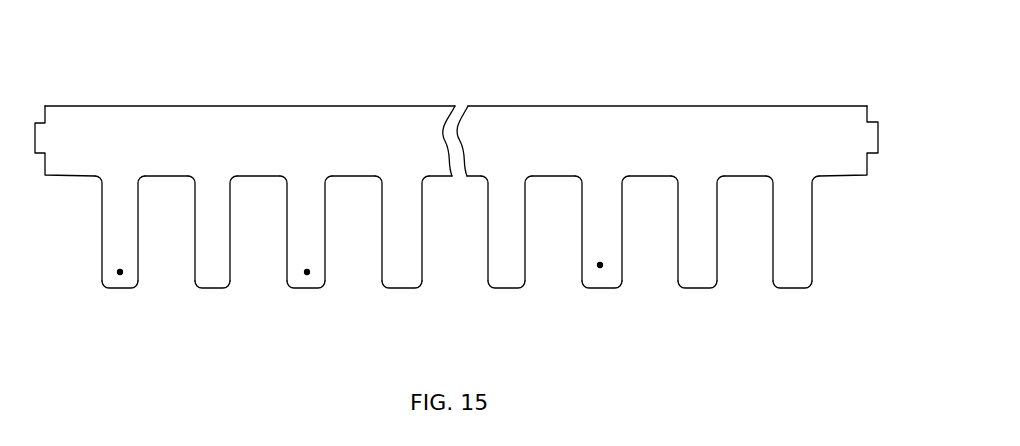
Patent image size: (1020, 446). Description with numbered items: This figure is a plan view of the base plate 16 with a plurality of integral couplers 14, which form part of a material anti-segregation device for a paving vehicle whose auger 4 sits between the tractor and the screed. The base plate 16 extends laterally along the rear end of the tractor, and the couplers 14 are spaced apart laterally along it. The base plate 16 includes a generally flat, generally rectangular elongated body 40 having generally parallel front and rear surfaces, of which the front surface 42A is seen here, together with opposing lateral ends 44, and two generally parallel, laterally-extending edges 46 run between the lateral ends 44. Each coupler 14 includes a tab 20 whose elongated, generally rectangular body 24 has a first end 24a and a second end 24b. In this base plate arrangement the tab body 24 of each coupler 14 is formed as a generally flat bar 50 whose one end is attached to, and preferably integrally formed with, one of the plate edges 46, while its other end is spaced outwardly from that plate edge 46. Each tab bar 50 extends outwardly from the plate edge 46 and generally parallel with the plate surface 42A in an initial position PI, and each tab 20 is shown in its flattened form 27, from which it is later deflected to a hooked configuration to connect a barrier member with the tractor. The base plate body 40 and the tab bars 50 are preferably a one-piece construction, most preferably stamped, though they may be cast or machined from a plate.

The auger 4 is at (35, 141).
The coupler 14 is at (157, 340).
The base plate 16 is at (450, 125).
The coupler tab 20 is at (457, 256).
The tab body 24 is at (457, 235).
The body first end 24a is at (123, 290).
The body second end 24b is at (118, 185).
The flattened form 27 is at (213, 245).
The elongated body 40 is at (364, 97).
The front surface 42A is at (323, 145).
The lateral end 44 is at (878, 145).
The plate edge 46 is at (620, 105).
The tab bar 50 is at (128, 234).
The initial position PI is at (120, 272).